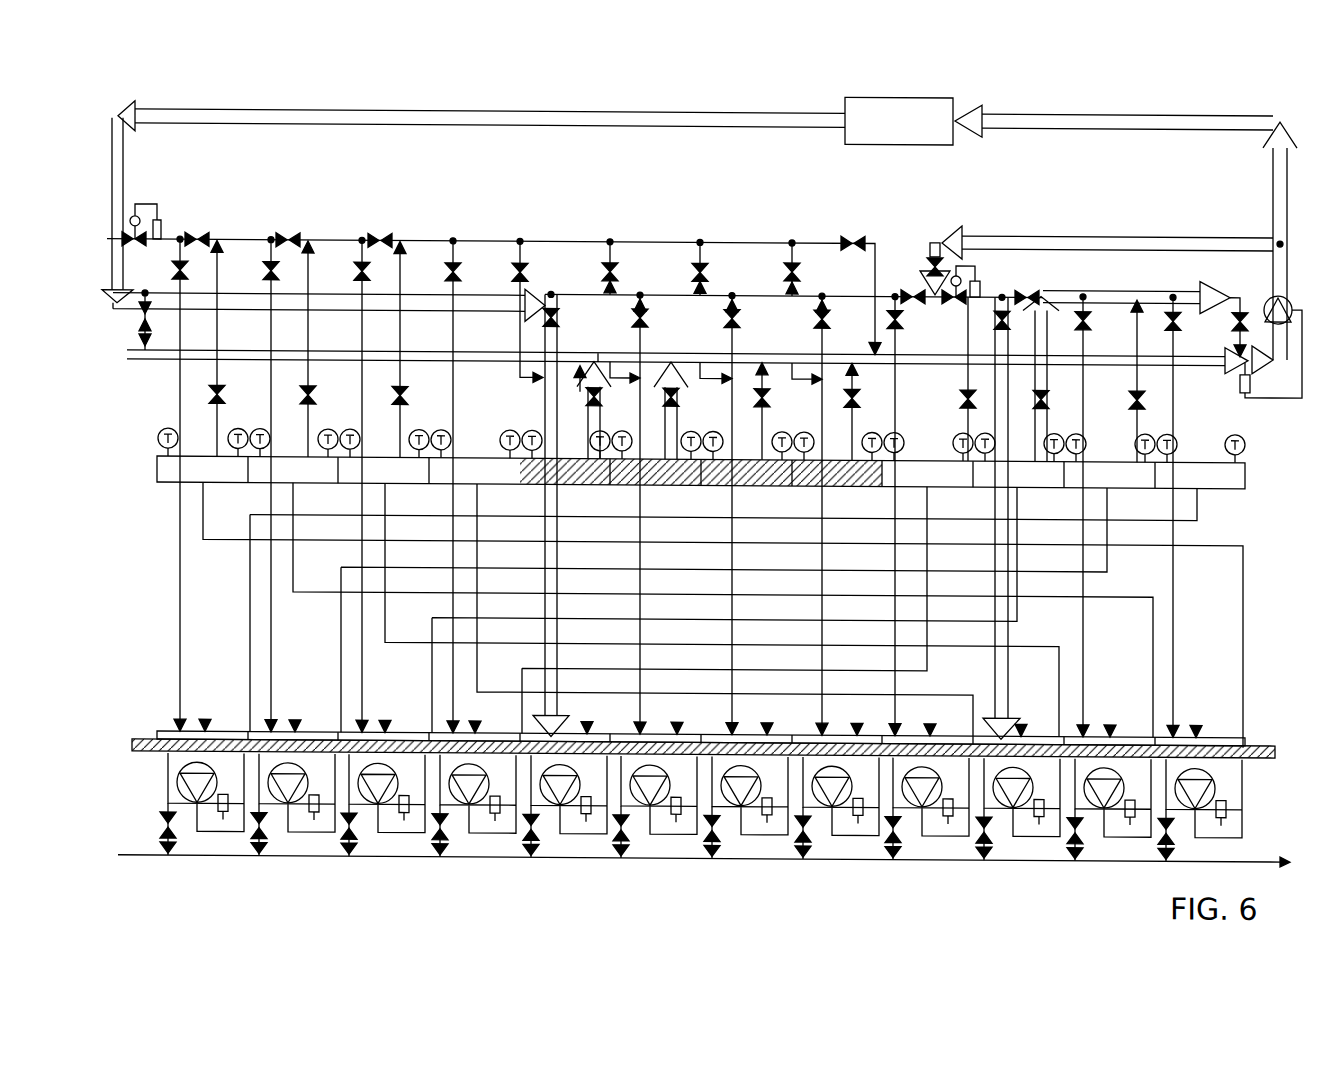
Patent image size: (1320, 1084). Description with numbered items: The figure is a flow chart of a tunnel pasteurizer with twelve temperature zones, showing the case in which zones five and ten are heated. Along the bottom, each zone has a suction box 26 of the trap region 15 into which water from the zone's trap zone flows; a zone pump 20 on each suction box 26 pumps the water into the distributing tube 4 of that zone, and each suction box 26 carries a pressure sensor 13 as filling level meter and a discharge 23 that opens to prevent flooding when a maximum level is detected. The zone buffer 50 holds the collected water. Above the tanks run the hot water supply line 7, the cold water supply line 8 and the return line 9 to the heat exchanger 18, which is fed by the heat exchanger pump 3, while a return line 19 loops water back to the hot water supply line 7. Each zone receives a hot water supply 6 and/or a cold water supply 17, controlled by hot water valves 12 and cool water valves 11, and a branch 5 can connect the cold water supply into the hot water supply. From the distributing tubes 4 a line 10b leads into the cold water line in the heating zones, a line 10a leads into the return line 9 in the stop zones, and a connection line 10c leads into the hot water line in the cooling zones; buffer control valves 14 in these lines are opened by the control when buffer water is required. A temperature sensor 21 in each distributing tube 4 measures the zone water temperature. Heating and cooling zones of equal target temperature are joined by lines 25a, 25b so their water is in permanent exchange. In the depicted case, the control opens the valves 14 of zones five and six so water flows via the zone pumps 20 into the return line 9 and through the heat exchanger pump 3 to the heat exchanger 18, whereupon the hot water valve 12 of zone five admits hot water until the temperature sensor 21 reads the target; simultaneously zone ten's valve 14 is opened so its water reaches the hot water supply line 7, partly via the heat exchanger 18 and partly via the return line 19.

The heat exchanger pump 3 is at (1266, 290).
The distributing tube 4 is at (157, 465).
The branch 5 is at (762, 390).
The hot water supply 6 is at (644, 708).
The hot water supply line 7 is at (484, 292).
The cold water supply line 8 is at (484, 238).
The return line 9 is at (484, 349).
The line to the return line 10a is at (674, 370).
The line to the cold water line 10b is at (308, 377).
The connection line to the hot water line 10c is at (1137, 372).
The cool water valve 11 is at (173, 272).
The hot water valve 12 is at (560, 320).
The pressure sensor 13 is at (223, 822).
The buffer control valve 14 is at (209, 395).
The trap region 15 is at (1262, 798).
The cold water supply 17 is at (180, 583).
The heat exchanger 18 is at (903, 139).
The return line 19 is at (1077, 230).
The zone pump 20 is at (177, 778).
The temperature sensor 21 is at (158, 435).
The discharge 23 is at (170, 836).
The connecting line 25a is at (203, 518).
The connecting line 25b is at (250, 652).
The suction box 26 is at (168, 758).
The zone buffer 50 is at (207, 724).